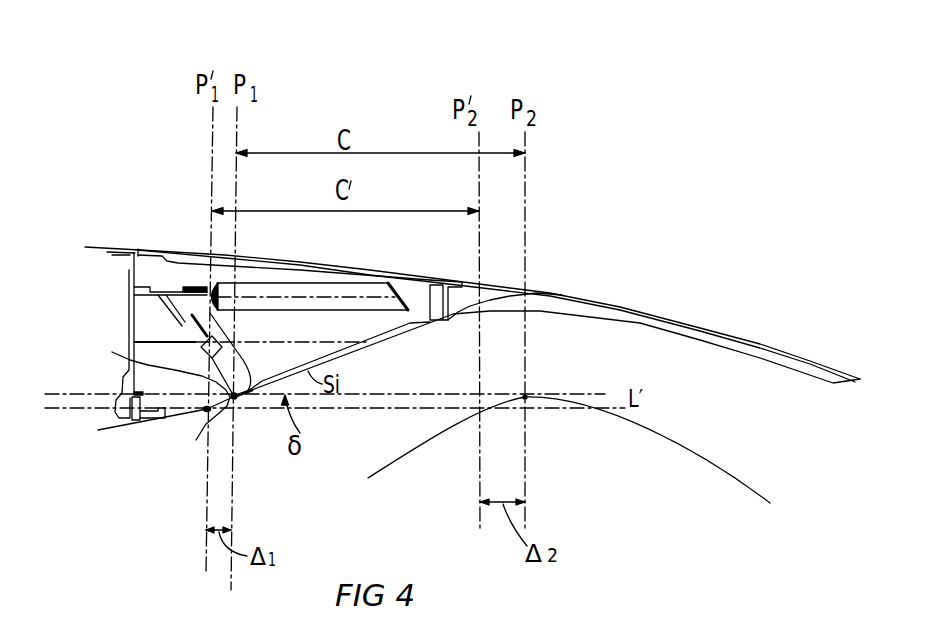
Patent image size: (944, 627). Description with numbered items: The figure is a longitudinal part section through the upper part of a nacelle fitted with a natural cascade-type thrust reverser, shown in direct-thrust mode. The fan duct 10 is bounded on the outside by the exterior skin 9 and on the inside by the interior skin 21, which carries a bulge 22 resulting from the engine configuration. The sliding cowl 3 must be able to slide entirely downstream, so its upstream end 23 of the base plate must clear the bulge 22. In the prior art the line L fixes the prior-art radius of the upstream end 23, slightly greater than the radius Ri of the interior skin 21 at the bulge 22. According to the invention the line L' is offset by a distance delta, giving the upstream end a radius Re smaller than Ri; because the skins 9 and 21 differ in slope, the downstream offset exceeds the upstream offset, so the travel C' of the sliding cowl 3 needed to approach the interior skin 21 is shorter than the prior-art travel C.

The sliding cowl 3 is at (364, 258).
The exterior skin of the fan duct 9 is at (146, 421).
The fan duct 10 is at (333, 387).
The interior skin 21 is at (390, 462).
The bulge 22 is at (530, 400).
The upstream end of the base plate 23 is at (170, 478).